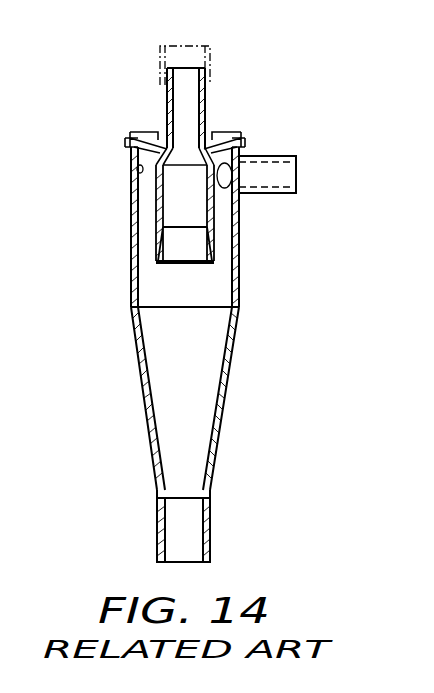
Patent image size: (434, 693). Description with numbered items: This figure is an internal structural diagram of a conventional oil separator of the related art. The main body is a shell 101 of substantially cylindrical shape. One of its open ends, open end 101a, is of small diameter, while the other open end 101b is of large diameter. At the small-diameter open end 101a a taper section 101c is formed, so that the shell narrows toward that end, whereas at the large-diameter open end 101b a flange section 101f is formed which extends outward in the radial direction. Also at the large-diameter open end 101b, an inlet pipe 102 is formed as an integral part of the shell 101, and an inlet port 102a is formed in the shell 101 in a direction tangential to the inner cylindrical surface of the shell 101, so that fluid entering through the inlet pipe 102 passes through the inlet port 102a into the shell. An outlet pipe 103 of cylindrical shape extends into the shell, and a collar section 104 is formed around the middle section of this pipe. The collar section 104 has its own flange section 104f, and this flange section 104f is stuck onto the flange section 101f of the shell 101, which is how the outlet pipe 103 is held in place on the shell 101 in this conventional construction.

The shell 101 is at (238, 260).
The open end 101a is at (210, 537).
The open end 101b is at (140, 172).
The taper section 101c is at (143, 405).
The flange section 101f is at (127, 146).
The inlet pipe 102 is at (288, 156).
The inlet port 102a is at (222, 190).
The outlet pipe 103 is at (205, 104).
The collar section 104 is at (164, 148).
The flange section 104f is at (128, 132).